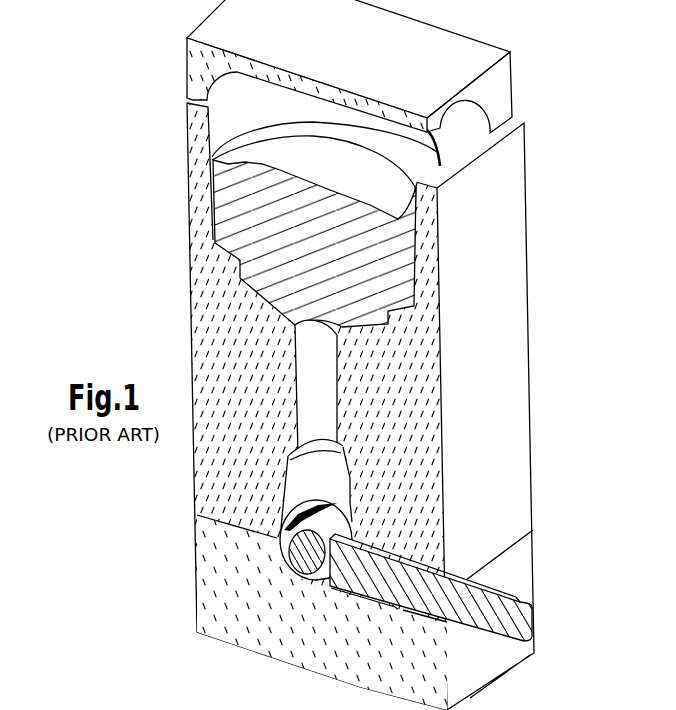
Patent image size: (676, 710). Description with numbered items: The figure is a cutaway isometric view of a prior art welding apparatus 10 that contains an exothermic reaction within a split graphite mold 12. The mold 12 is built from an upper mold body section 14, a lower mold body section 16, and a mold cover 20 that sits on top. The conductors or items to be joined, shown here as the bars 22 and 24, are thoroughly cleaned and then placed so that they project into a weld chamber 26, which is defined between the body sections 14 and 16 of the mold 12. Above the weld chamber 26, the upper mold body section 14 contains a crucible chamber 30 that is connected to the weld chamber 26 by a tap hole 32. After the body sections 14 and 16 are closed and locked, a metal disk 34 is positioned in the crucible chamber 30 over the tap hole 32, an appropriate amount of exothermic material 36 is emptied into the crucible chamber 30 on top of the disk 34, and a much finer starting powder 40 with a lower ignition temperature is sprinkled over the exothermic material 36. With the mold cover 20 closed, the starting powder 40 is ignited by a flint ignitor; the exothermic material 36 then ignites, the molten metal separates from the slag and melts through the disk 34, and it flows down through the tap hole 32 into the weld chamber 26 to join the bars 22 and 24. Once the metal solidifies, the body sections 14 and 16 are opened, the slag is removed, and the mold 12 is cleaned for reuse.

The prior art welding apparatus 10 is at (138, 40).
The split graphite mold 12 is at (165, 106).
The upper mold body section 14 is at (191, 277).
The lower mold body section 16 is at (205, 537).
The mold cover 20 is at (420, 35).
The bar 22 is at (300, 552).
The bar 24 is at (492, 604).
The weld chamber 26 is at (360, 490).
The crucible chamber 30 is at (212, 132).
The tap hole 32 is at (350, 387).
The metal disk 34 is at (365, 337).
The exothermic material 36 is at (399, 272).
The starting powder 40 is at (393, 198).